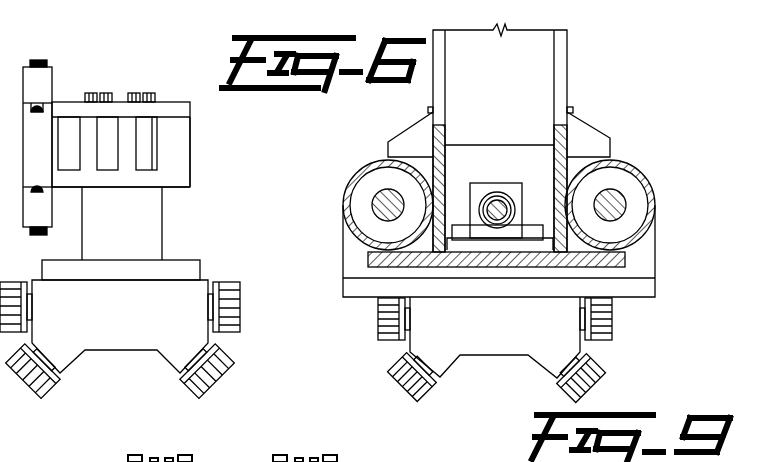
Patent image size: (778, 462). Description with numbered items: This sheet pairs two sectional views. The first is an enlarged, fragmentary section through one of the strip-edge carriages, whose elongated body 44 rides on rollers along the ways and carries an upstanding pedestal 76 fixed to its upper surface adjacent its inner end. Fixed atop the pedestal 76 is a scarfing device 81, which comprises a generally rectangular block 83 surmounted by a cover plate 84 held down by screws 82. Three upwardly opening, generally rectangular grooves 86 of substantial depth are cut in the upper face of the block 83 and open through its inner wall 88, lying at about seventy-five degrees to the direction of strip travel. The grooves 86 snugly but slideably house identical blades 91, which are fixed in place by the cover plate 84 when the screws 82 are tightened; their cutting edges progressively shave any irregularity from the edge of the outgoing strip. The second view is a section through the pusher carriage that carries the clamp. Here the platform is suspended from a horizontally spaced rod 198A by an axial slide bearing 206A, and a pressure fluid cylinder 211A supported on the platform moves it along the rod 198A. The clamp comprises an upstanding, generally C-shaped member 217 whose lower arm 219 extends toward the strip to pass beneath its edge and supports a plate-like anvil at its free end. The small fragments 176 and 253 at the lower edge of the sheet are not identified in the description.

In FIG. 6, the scarfing device 81 is at (193, 99).
In FIG. 6, the screws 82 is at (143, 95).
In FIG. 6, the block 83 is at (192, 173).
In FIG. 6, the cover plate 84 is at (177, 110).
In FIG. 6, the grooves 86 is at (148, 140).
In FIG. 6, the inner wall 88 is at (178, 132).
In FIG. 6, the blades 91 is at (68, 130).
In FIG. 6, the pedestal 76 is at (143, 235).
In FIG. 6, the carriage body 44 is at (120, 329).
In FIG. 6, the lower housing 176 is at (245, 461).
In FIG. 6, the lower housing member 253 is at (313, 460).
In FIG. 9, the C-shaped member 217 is at (530, 72).
In FIG. 9, the lower arm 219 is at (565, 145).
In FIG. 9, the rod 198A is at (618, 193).
In FIG. 9, the axial slide bearing 206A is at (655, 218).
In FIG. 9, the pressure fluid cylinder 211A is at (487, 195).